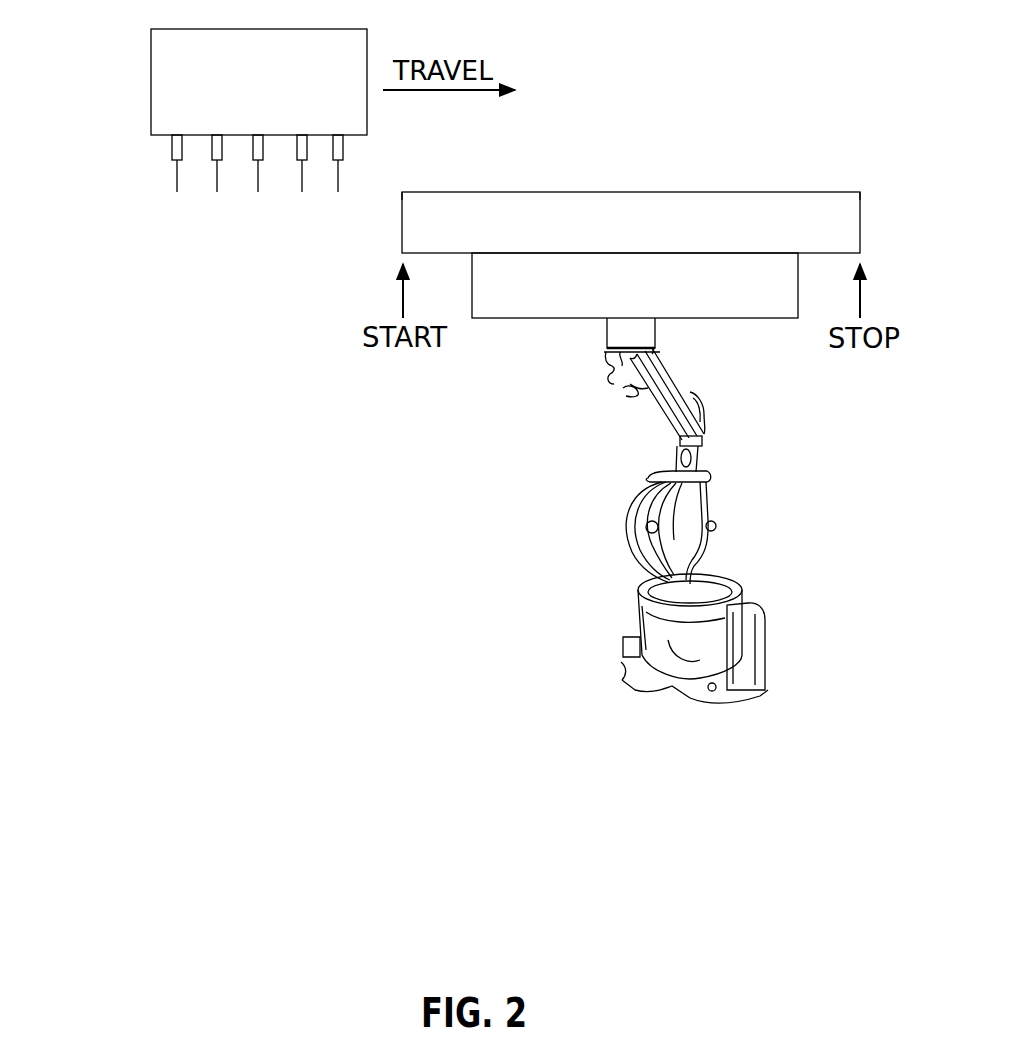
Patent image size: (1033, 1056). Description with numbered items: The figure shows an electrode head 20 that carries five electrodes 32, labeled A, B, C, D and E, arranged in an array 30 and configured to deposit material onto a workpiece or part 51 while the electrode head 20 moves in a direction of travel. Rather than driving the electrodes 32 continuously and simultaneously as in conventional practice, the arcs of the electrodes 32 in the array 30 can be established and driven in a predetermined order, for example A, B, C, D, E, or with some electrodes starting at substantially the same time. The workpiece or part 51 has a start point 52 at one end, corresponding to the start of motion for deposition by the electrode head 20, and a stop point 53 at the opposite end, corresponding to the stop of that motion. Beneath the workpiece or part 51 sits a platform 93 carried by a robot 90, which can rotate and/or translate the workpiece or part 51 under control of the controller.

The electrode head 20 is at (177, 77).
The array 30 is at (153, 160).
The electrodes 32 is at (175, 197).
The workpiece or part 51 is at (860, 213).
The start point 52 is at (405, 190).
The stop point 53 is at (858, 188).
The robot 90 is at (692, 453).
The platform 93 is at (525, 320).